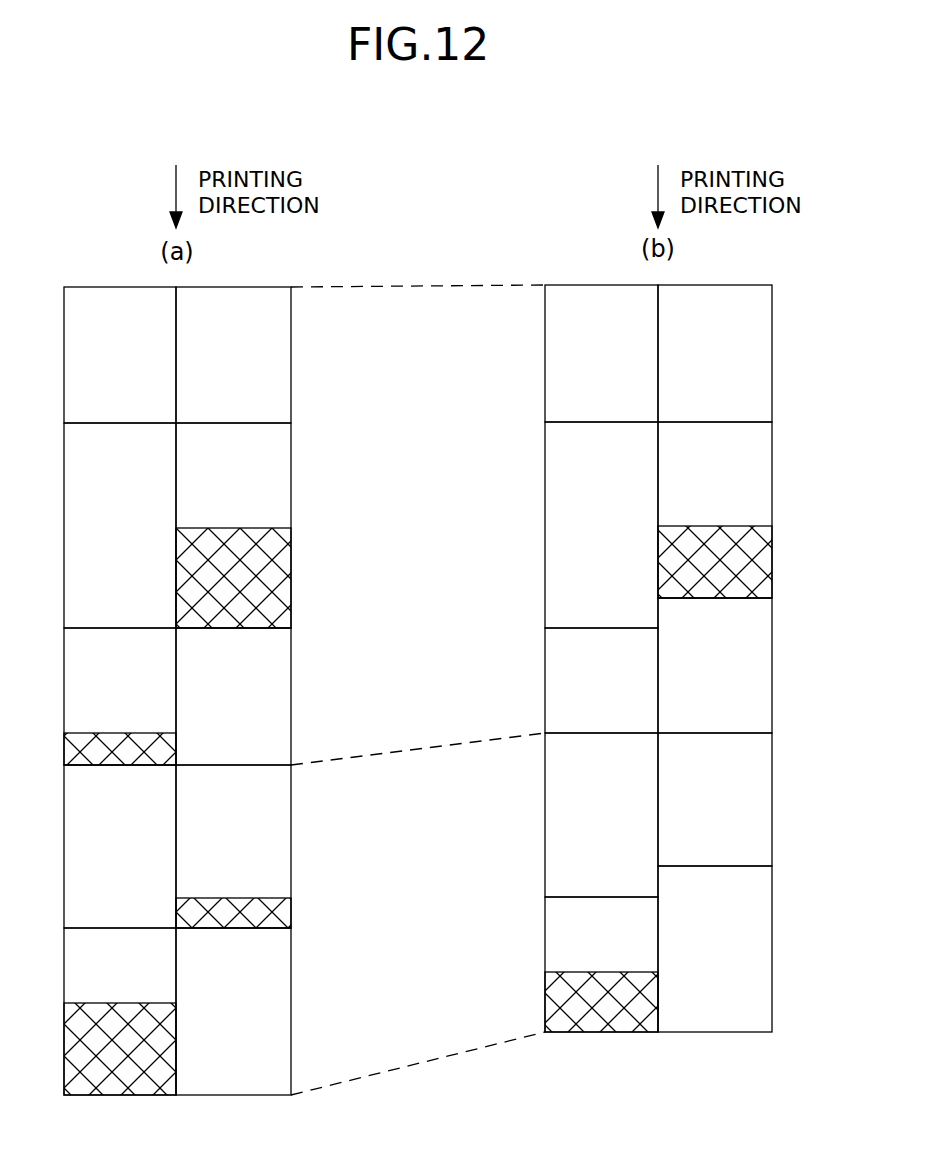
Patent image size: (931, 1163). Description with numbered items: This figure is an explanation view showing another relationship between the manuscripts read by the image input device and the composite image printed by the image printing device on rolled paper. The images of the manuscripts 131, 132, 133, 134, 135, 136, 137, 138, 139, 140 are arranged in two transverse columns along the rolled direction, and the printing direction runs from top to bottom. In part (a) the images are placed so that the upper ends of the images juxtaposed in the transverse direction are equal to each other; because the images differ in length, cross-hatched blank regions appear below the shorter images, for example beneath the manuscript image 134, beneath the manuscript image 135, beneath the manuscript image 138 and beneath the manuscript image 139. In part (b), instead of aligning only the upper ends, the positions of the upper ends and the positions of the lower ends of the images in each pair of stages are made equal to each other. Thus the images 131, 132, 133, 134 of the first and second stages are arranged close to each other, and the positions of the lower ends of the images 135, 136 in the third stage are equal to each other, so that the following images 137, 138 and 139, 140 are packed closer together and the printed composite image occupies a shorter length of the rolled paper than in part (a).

The manuscript image 131 is at (361, 354).
The manuscript image 132 is at (474, 354).
The manuscript image 133 is at (361, 525).
The manuscript image 134 is at (474, 525).
The manuscript image 135 is at (361, 696).
The manuscript image 136 is at (474, 681).
The manuscript image 137 is at (361, 830).
The manuscript image 138 is at (474, 830).
The manuscript image 139 is at (361, 996).
The manuscript image 140 is at (474, 980).